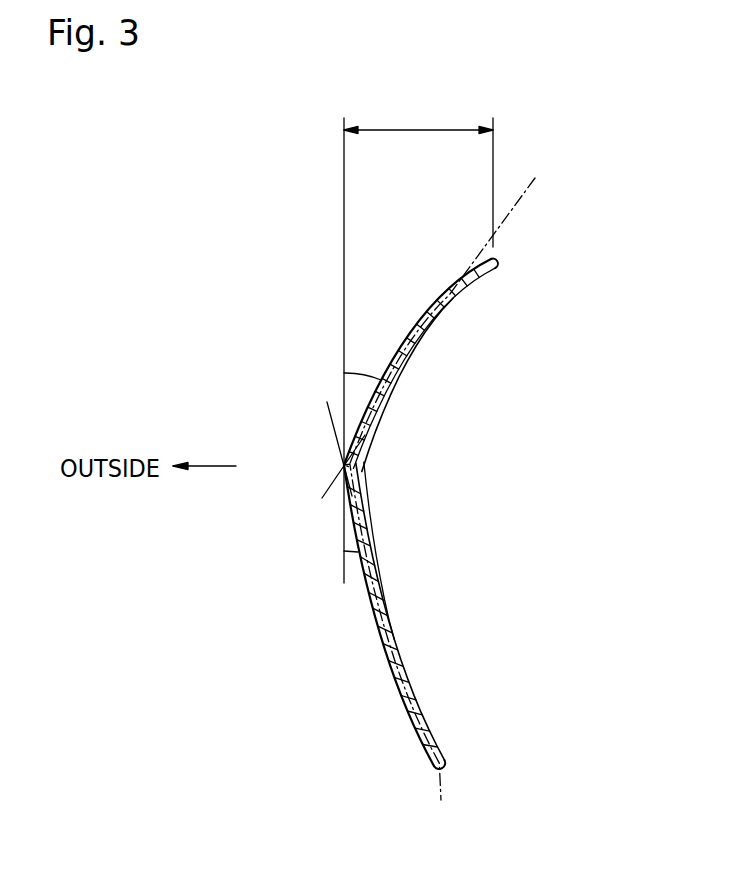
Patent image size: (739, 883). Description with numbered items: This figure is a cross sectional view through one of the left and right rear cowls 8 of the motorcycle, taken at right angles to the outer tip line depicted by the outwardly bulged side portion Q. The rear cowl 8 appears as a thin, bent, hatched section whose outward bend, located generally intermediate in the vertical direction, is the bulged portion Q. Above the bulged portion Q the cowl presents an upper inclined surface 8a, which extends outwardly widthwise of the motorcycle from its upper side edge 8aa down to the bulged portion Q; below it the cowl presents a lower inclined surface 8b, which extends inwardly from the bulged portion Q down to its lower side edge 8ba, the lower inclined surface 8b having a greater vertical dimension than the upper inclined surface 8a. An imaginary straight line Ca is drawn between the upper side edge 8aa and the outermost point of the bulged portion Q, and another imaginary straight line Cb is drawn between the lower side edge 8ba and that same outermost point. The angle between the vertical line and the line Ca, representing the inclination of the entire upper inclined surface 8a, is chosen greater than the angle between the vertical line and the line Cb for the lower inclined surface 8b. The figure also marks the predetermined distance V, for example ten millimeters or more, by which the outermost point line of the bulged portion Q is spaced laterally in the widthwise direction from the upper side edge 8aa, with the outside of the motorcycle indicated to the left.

The rear cowl 8 is at (456, 504).
The upper inclined surface 8a is at (421, 342).
The upper side edge 8aa is at (487, 256).
The lower inclined surface 8b is at (391, 629).
The lower side edge 8ba is at (432, 765).
The imaginary straight line Ca is at (517, 200).
The imaginary straight line Cb is at (441, 797).
The predetermined distance V is at (418, 117).
The outwardly bulged side portion Q is at (343, 465).